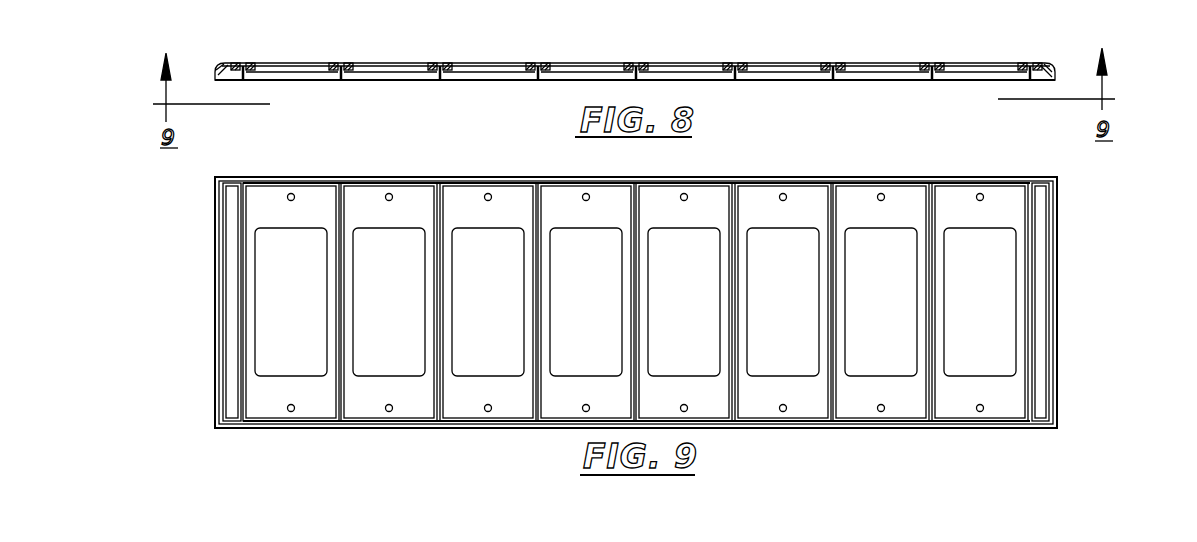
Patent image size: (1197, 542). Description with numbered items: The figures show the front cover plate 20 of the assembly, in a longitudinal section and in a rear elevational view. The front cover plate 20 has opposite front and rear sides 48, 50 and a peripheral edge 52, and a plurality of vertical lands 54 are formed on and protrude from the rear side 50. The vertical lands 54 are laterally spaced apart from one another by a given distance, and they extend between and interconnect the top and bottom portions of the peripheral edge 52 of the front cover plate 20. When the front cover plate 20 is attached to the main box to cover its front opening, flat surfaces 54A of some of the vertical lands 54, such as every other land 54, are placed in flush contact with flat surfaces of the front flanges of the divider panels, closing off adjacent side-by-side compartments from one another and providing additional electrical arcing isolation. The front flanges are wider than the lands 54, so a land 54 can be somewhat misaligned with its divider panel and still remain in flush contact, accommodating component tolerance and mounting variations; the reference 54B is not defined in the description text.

In FIG. 8, the front cover plate 20 is at (815, 50).
In FIG. 9, the front cover plate 20 is at (1065, 214).
In FIG. 8, the front side 48 is at (338, 67).
In FIG. 8, the rear side 50 is at (312, 81).
In FIG. 9, the rear side 50 is at (513, 198).
In FIG. 8, the peripheral edge 52 is at (635, 71).
In FIG. 9, the peripheral edge 52 is at (1058, 307).
In FIG. 8, the vertical lands 54 is at (253, 70).
In FIG. 9, the vertical lands 54 is at (243, 317).
In FIG. 9, the flat surfaces 54A is at (767, 178).
In FIG. 9, the bottom edge of wall plate 54B is at (462, 428).